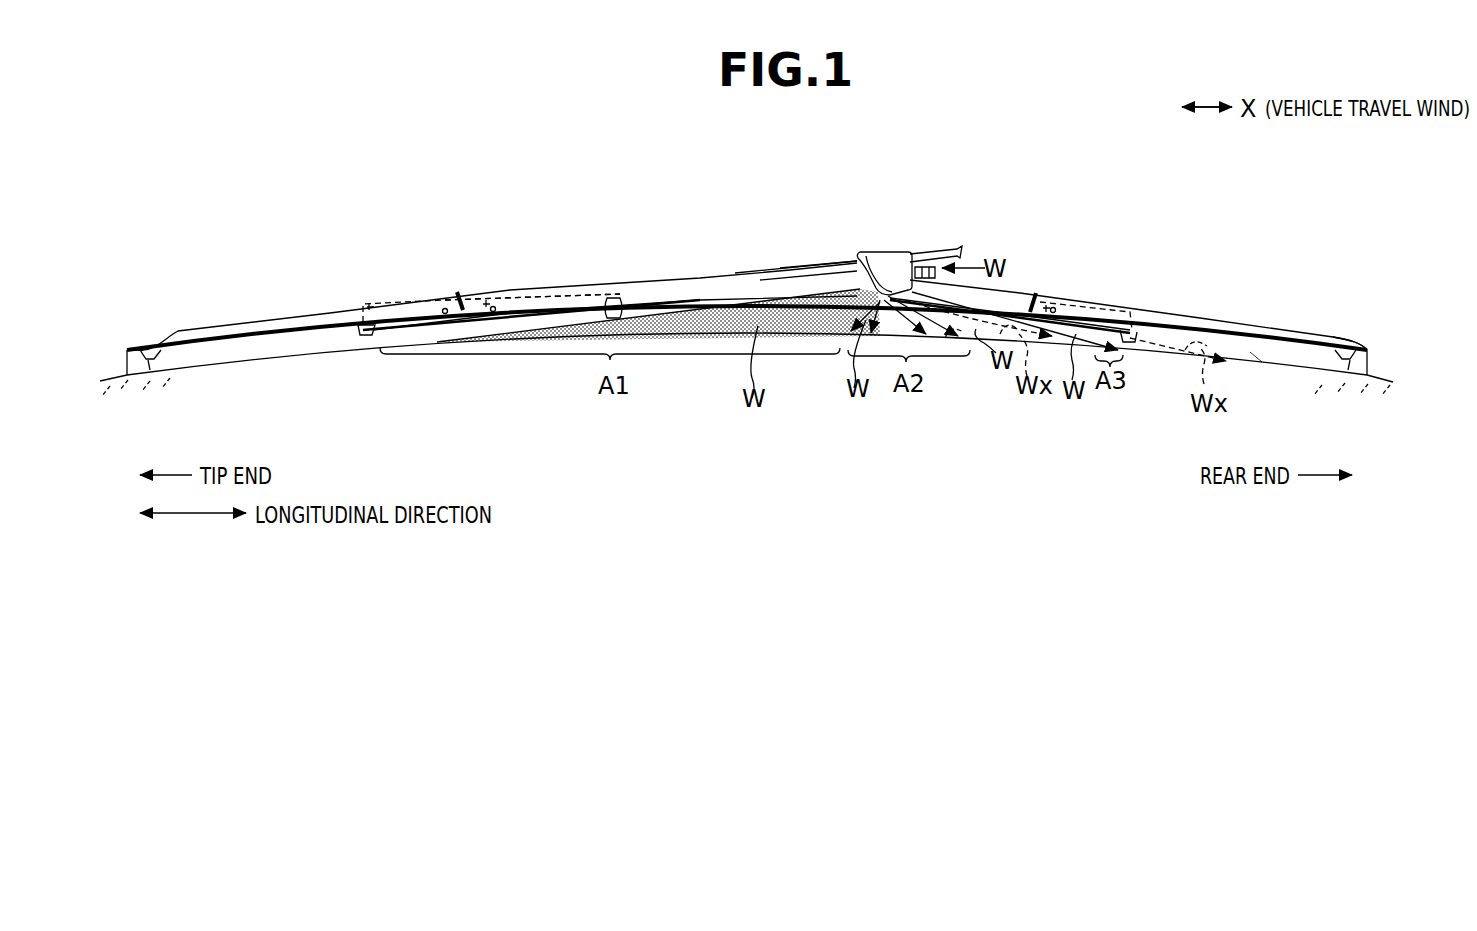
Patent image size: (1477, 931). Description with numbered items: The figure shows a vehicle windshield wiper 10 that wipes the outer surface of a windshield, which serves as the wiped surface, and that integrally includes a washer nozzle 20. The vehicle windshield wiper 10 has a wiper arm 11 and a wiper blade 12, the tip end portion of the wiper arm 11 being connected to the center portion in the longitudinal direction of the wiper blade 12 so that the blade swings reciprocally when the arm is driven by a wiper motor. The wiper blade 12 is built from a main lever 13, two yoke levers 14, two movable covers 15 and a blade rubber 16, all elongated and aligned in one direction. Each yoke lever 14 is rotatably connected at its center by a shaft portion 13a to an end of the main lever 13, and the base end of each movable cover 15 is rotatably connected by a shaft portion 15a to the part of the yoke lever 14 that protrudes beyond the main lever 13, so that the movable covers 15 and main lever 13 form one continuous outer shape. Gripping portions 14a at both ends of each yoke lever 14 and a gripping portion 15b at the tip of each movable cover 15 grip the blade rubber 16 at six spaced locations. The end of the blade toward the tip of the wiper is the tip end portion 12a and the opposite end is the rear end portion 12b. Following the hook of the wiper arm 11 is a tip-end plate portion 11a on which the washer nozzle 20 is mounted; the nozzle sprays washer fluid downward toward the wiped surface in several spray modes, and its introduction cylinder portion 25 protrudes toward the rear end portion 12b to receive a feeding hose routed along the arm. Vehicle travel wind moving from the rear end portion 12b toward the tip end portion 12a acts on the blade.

The vehicle windshield wiper 10 is at (972, 180).
The wiper arm 11 is at (958, 251).
The tip-end plate portion 11a is at (813, 263).
The wiper blade 12 is at (702, 275).
The tip end portion 12a is at (126, 348).
The rear end portion 12b is at (1343, 342).
The main lever 13 is at (752, 284).
The shaft portion 13a is at (464, 297).
The yoke lever 14 is at (524, 293).
The gripping portion 14a is at (367, 349).
The movable cover 15 is at (244, 324).
The shaft portion 15a is at (426, 301).
The gripping portion 15b is at (154, 367).
The blade rubber 16 is at (1256, 352).
The washer nozzle 20 is at (896, 251).
The introduction cylinder portion 25 is at (924, 265).